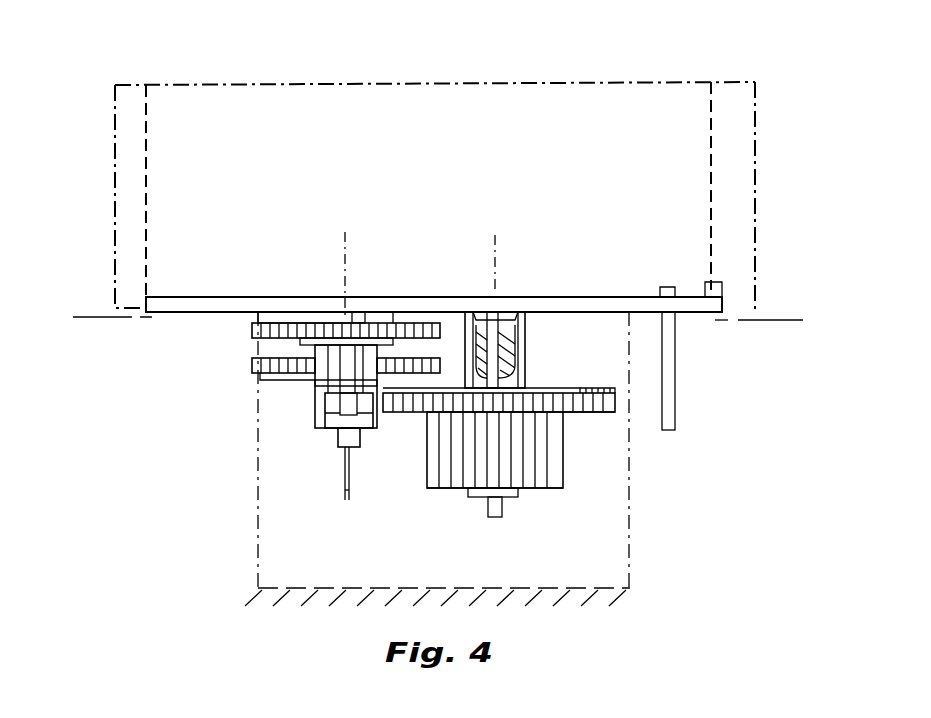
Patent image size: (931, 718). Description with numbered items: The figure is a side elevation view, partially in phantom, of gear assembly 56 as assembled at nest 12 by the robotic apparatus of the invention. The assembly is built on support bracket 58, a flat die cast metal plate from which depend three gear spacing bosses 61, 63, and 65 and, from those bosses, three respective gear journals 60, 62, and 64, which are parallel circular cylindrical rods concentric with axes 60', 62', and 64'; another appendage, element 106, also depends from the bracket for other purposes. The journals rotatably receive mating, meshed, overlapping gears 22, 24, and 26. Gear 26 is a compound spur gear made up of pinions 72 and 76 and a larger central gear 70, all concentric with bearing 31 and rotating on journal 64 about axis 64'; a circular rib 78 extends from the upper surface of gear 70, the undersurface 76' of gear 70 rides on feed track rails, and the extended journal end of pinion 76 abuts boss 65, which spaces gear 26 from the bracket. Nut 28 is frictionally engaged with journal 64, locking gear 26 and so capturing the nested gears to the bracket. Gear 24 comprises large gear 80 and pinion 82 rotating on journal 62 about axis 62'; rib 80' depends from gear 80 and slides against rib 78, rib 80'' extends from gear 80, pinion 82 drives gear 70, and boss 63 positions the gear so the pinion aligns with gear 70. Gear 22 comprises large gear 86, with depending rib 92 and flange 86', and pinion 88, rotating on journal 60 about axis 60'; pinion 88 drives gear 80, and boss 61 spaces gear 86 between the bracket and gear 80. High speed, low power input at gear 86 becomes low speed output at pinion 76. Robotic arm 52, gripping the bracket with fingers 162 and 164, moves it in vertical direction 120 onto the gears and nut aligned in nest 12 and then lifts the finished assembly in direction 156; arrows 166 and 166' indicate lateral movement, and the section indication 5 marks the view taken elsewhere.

The nest 12 is at (630, 541).
The gear 22 is at (318, 325).
The gear 24 is at (362, 440).
The gear 26 is at (563, 468).
The nut 28 is at (510, 494).
The gear bearing 31 is at (498, 362).
The arm 52 is at (600, 70).
The gear assembly 56 is at (599, 283).
The support bracket 58 is at (398, 310).
The gear journal 60 is at (368, 423).
The axis 60' is at (323, 276).
The gear spacing boss 61 is at (352, 318).
The gear journal 62 is at (360, 473).
The axis 62' is at (327, 508).
The gear spacing boss 63 is at (375, 308).
The gear journal 64 is at (478, 522).
The axis 64' is at (521, 263).
The gear spacing boss 65 is at (482, 322).
The central gear 70 is at (612, 392).
The pinion 72 is at (563, 490).
The pinion 76 is at (515, 350).
The undersurface 76' is at (589, 434).
The circular rib 78 is at (533, 390).
The large diameter gear 80 is at (311, 374).
The circular rib 80' is at (262, 389).
The circular rib 80'' is at (319, 399).
The pinion 82 is at (344, 432).
The large diameter gear 86 is at (346, 298).
The gear flange 86' is at (301, 351).
The pinion 88 is at (322, 416).
The circular rib 92 is at (308, 325).
The element 106 is at (672, 413).
The vertical direction 120 is at (737, 340).
The direction 156 is at (737, 120).
The gripping finger 162 is at (748, 210).
The gripping finger 164 is at (125, 200).
The lateral movement arrow 166 is at (773, 419).
The lateral movement arrow 166' is at (136, 419).
The section line 5 is at (90, 300).